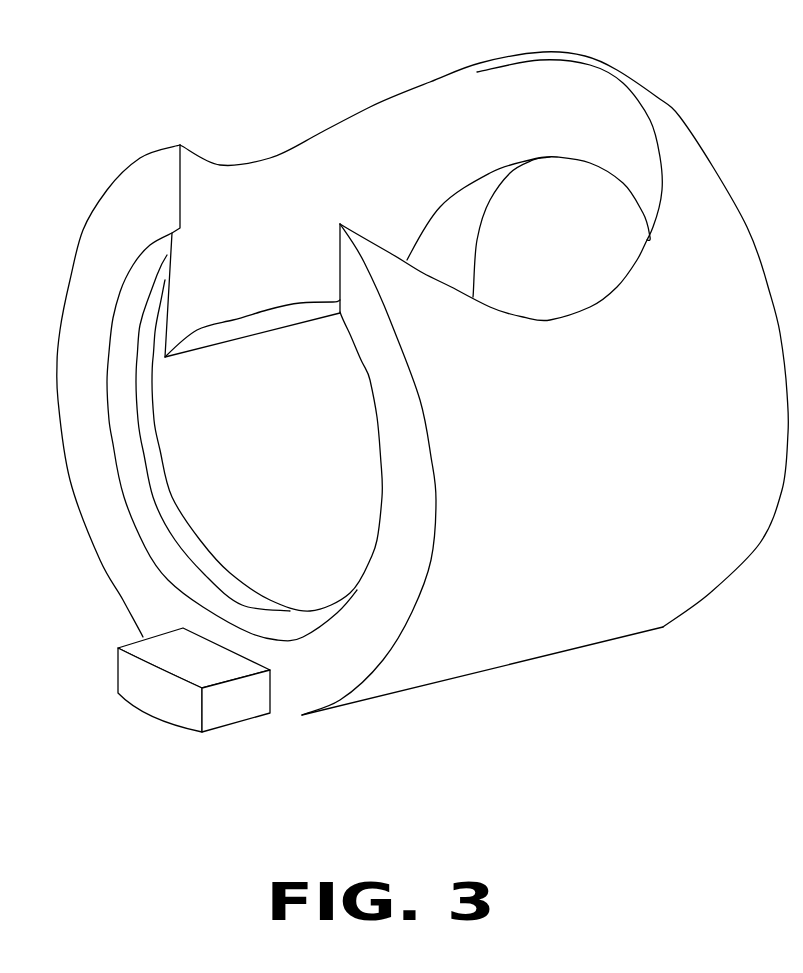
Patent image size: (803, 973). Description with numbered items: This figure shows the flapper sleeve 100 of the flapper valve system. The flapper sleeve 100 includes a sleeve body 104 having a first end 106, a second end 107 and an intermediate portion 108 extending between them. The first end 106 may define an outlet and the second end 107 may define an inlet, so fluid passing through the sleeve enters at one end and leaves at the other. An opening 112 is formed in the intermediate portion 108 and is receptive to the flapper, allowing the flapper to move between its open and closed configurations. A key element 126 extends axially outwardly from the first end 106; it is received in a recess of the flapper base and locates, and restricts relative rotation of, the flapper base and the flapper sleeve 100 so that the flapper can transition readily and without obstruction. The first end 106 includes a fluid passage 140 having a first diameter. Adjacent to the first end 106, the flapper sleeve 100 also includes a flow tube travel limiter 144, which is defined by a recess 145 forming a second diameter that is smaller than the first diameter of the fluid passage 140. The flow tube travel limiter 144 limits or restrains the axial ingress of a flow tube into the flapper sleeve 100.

The flapper sleeve 100 is at (557, 742).
The sleeve body 104 is at (593, 513).
The first end 106 is at (343, 653).
The second end 107 is at (617, 68).
The intermediate portion 108 is at (548, 435).
The opening 112 is at (447, 104).
The key element 126 is at (230, 708).
The fluid passage 140 is at (376, 417).
The flow tube travel limiter 144 is at (210, 577).
The recess 145 is at (163, 487).